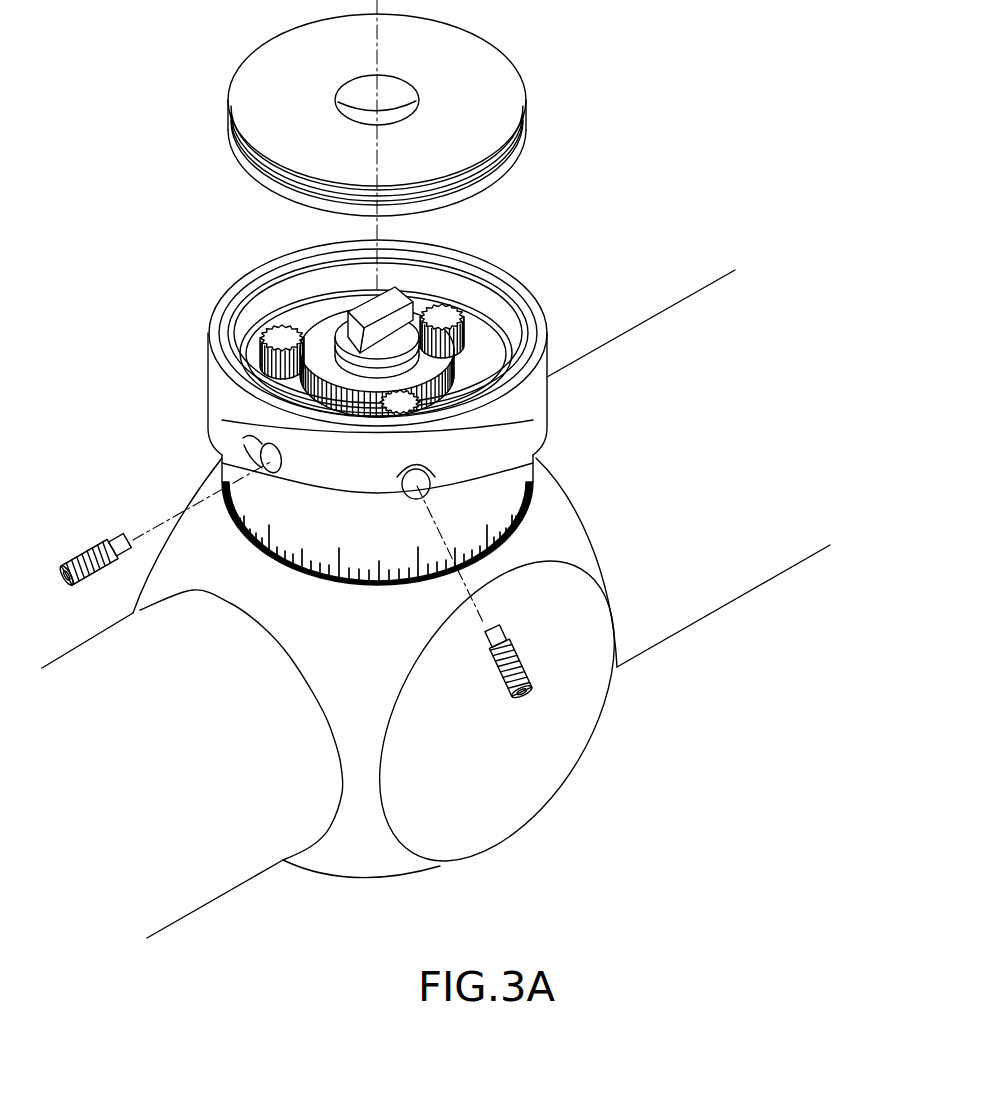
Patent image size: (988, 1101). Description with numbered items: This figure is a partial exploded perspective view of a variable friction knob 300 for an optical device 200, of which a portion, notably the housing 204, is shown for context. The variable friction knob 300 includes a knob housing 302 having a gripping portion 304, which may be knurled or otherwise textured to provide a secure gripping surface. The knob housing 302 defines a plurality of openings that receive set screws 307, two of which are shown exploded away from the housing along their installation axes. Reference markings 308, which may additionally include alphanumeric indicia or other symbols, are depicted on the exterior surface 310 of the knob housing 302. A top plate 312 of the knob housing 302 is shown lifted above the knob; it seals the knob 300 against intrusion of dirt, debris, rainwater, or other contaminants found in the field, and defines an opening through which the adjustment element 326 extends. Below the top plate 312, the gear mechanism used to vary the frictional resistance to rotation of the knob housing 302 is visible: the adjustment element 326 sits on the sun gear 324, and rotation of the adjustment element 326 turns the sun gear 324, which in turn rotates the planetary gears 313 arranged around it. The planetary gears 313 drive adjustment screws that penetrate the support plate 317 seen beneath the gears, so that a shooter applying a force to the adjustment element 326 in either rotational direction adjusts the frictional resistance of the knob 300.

The optical device 200 is at (628, 714).
The housing 204 is at (572, 521).
The variable friction knob 300 is at (563, 195).
The knob housing 302 is at (541, 326).
The gripping portion 304 is at (214, 386).
The set screws 307 is at (62, 562).
The reference markings 308 is at (337, 549).
The exterior surface 310 is at (518, 461).
The top plate 312 is at (502, 88).
The planetary gears 313 is at (397, 90).
The support plate 317 is at (497, 358).
The sun gear 324 is at (325, 335).
The adjustment element 326 is at (360, 312).